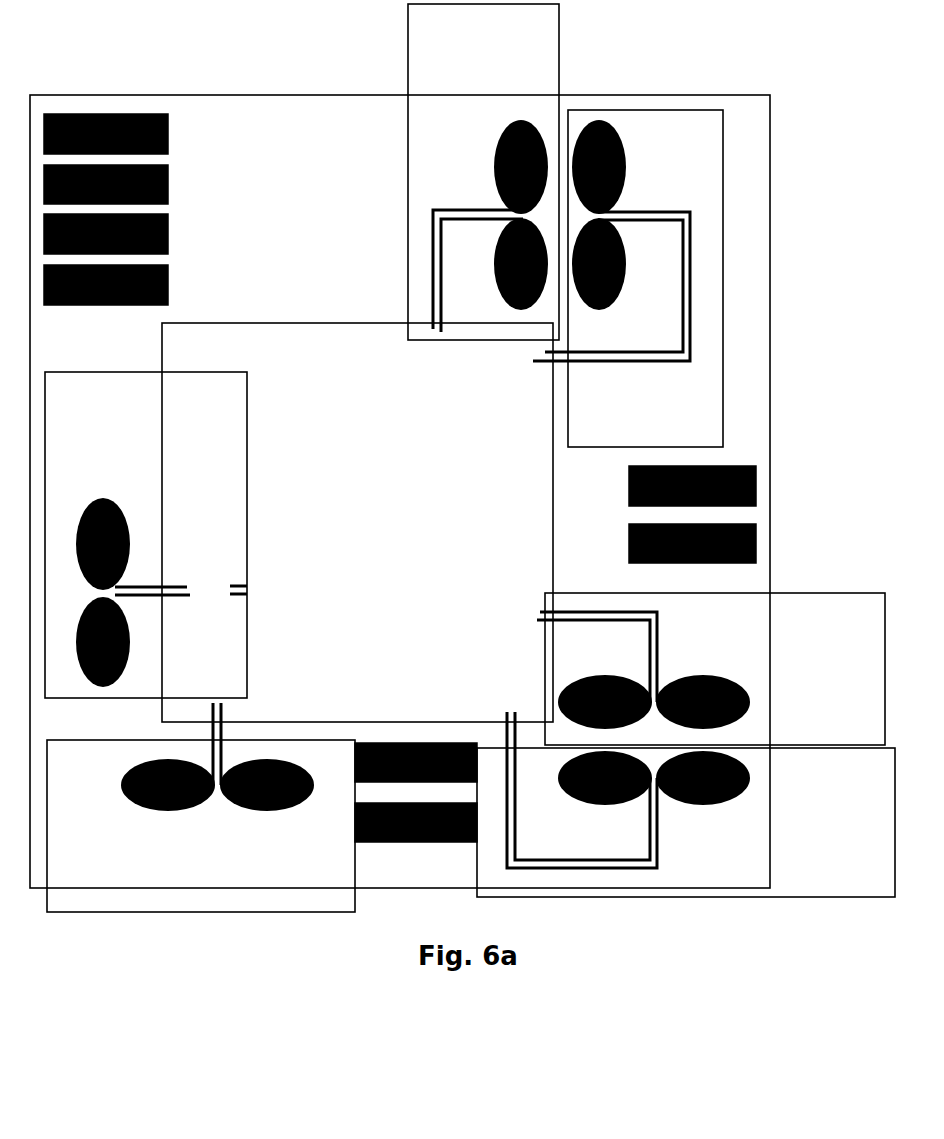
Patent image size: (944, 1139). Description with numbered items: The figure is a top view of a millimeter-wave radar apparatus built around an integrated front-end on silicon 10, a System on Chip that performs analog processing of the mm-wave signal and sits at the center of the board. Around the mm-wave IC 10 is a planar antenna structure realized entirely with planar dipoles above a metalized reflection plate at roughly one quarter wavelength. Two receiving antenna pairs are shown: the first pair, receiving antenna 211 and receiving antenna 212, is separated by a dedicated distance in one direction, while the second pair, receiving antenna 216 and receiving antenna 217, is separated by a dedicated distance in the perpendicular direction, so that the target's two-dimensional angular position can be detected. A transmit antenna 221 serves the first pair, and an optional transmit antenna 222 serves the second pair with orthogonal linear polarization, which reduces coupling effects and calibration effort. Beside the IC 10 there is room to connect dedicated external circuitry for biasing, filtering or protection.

The integrated front-end on silicon 10 is at (357, 522).
The receiving antenna 211 is at (483, 172).
The receiving antenna 212 is at (628, 278).
The receiving antenna 216 is at (711, 669).
The receiving antenna 217 is at (686, 804).
The transmit antenna 221 is at (146, 535).
The transmit antenna 222 is at (201, 807).